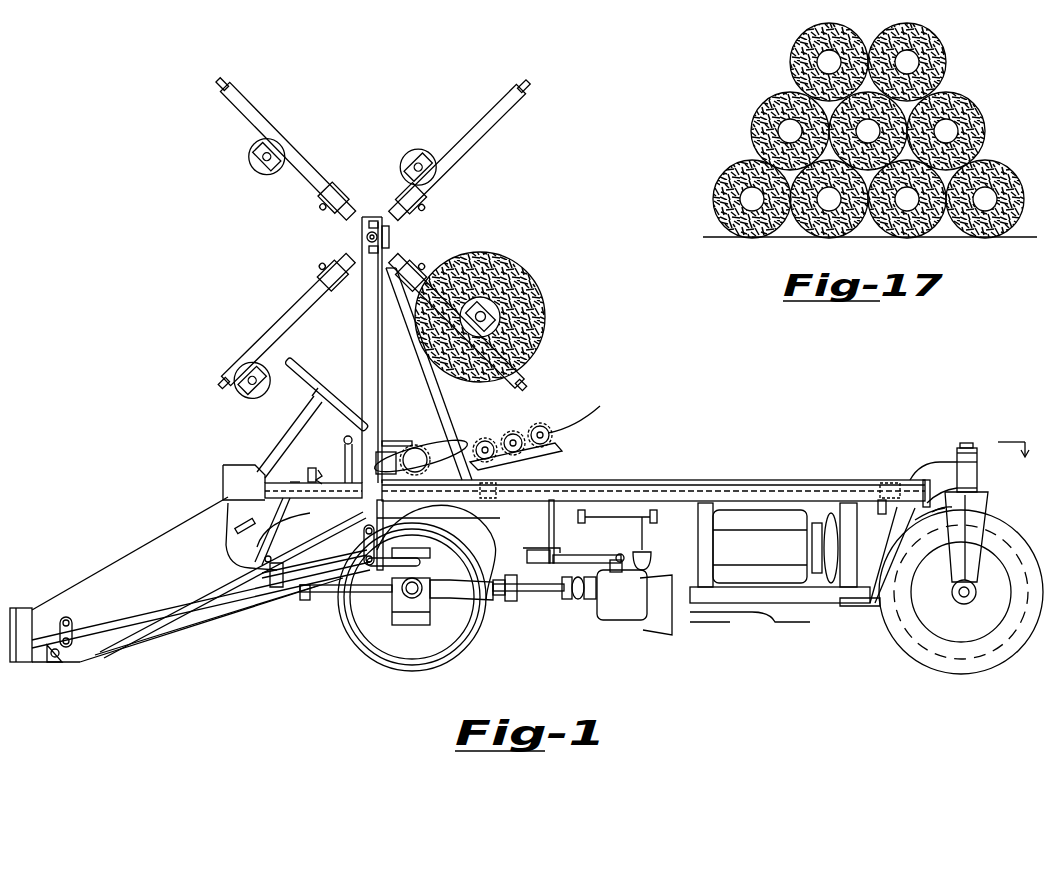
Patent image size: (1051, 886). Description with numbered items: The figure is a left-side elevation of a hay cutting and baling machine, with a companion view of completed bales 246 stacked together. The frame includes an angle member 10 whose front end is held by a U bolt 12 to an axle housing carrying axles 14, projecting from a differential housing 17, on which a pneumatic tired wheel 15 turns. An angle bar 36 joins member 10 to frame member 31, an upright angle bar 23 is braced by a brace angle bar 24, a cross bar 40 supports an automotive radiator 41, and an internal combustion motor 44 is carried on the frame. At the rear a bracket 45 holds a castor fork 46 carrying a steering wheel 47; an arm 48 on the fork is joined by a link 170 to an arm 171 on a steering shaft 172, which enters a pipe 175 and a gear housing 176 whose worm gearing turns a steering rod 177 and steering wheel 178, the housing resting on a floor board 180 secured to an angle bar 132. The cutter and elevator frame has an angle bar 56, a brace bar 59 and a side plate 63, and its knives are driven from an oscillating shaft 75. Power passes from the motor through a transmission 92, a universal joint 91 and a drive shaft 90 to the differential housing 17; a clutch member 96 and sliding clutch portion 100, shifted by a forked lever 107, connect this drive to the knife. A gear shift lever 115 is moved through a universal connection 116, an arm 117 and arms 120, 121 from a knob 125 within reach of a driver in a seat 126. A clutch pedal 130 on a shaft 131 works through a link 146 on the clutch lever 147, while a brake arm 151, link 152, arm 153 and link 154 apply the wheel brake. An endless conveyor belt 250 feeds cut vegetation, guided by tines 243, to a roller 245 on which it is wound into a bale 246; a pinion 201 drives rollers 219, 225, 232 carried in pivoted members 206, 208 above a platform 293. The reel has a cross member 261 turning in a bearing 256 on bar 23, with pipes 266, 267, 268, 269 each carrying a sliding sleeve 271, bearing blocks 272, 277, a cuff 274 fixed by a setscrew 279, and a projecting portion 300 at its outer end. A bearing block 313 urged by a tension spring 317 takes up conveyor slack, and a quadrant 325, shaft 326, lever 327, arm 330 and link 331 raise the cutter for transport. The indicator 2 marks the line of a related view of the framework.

In FIG. 1, the section line 2 is at (1013, 438).
In FIG. 1, the angle member 10 is at (751, 592).
In FIG. 1, the U bolt 12 is at (461, 595).
In FIG. 1, the axle 14 is at (411, 601).
In FIG. 1, the pneumatic tired wheel 15 is at (470, 643).
In FIG. 1, the differential housing 17 is at (410, 625).
In FIG. 1, the vertical angle bar 23 is at (362, 319).
In FIG. 1, the brace angle bar 24 is at (428, 384).
In FIG. 1, the frame member 31 is at (760, 481).
In FIG. 1, the angle bar 36 is at (712, 530).
In FIG. 1, the cross bar 40 is at (858, 606).
In FIG. 1, the automotive radiator 41 is at (855, 542).
In FIG. 1, the internal combustion motor 44 is at (775, 546).
In FIG. 1, the bracket 45 is at (938, 468).
In FIG. 1, the castor fork 46 is at (980, 505).
In FIG. 1, the pneumatic tired wheel 47 is at (893, 645).
In FIG. 1, the arm 48 is at (933, 514).
In FIG. 1, the angle bar 56 is at (160, 606).
In FIG. 1, the brace bar 59 is at (168, 645).
In FIG. 1, the plate 63 is at (117, 570).
In FIG. 1, the oscillating shaft 75 is at (104, 628).
In FIG. 1, the drive shaft 90 is at (542, 594).
In FIG. 1, the universal joint 91 is at (580, 602).
In FIG. 1, the transmission mechanism 92 is at (636, 622).
In FIG. 1, the clutch member 96 is at (533, 551).
In FIG. 1, the male clutch portion 100 is at (534, 547).
In FIG. 1, the forked lever 107 is at (554, 538).
In FIG. 1, the gear shift lever 115 is at (642, 537).
In FIG. 1, the universal connection 116 is at (647, 520).
In FIG. 1, the arm 117 is at (616, 533).
In FIG. 1, the upwardly projecting arm 120 is at (617, 513).
In FIG. 1, the upwardly projecting arm 121 is at (643, 513).
In FIG. 1, the knob 125 is at (339, 452).
In FIG. 1, the seat 126 is at (421, 456).
In FIG. 1, the clutch pedal 130 is at (230, 544).
In FIG. 1, the shaft 131 is at (272, 559).
In FIG. 1, the angle bar 132 is at (383, 516).
In FIG. 1, the link 146 is at (588, 550).
In FIG. 1, the clutch lever 147 is at (616, 572).
In FIG. 1, the arm 151 is at (270, 576).
In FIG. 1, the link 152 is at (305, 600).
In FIG. 1, the arm 153 is at (378, 539).
In FIG. 1, the link 154 is at (422, 563).
In FIG. 1, the link 170 is at (889, 523).
In FIG. 1, the downwardly projecting arm 171 is at (882, 481).
In FIG. 1, the steering shaft 172 is at (795, 481).
In FIG. 1, the pipe 175 is at (268, 492).
In FIG. 1, the gear housing 176 is at (232, 466).
In FIG. 1, the steering rod 177 is at (297, 428).
In FIG. 1, the steering wheel 178 is at (317, 382).
In FIG. 1, the floor board 180 is at (232, 525).
In FIG. 1, the pinion 201 is at (420, 447).
In FIG. 1, the member 206 is at (500, 468).
In FIG. 1, the member 208 is at (558, 452).
In FIG. 1, the roller 219 is at (484, 438).
In FIG. 1, the roller 225 is at (513, 431).
In FIG. 1, the roller 232 is at (548, 418).
In FIG. 1, the tines 243 is at (600, 410).
In FIG. 1, the roller 245 is at (250, 168).
In FIG. 1, the bale 246 is at (545, 310).
In FIG. 17, the bale 246 is at (946, 63).
In FIG. 1, the endless conveyor belt 250 is at (390, 441).
In FIG. 1, the bearing 256 is at (366, 237).
In FIG. 1, the cross member 261 is at (390, 236).
In FIG. 1, the pipe 266 is at (288, 323).
In FIG. 1, the pipe 267 is at (525, 381).
In FIG. 1, the pipe 268 is at (487, 140).
In FIG. 1, the pipe 269 is at (250, 110).
In FIG. 1, the sleeve 271 is at (287, 140).
In FIG. 1, the bearing block member 272 is at (425, 160).
In FIG. 1, the cuff 274 is at (331, 206).
In FIG. 1, the upper bearing block 277 is at (268, 174).
In FIG. 1, the setscrew 279 is at (346, 190).
In FIG. 1, the platform 293 is at (688, 480).
In FIG. 1, the projecting portion 300 is at (226, 86).
In FIG. 1, the bearing block 313 is at (334, 468).
In FIG. 1, the tension spring 317 is at (312, 466).
In FIG. 1, the quadrant 325 is at (275, 530).
In FIG. 1, the shaft 326 is at (315, 565).
In FIG. 1, the lever 327 is at (290, 470).
In FIG. 1, the arm 330 is at (298, 598).
In FIG. 1, the link 331 is at (354, 592).